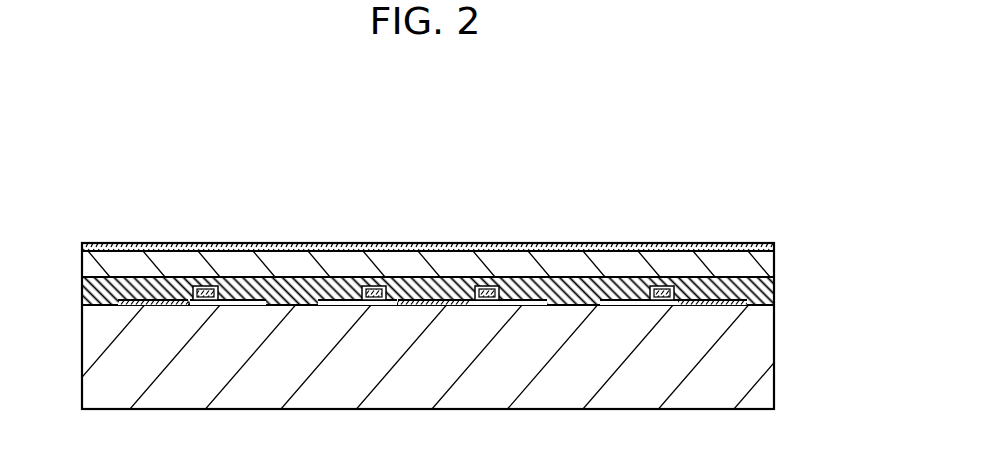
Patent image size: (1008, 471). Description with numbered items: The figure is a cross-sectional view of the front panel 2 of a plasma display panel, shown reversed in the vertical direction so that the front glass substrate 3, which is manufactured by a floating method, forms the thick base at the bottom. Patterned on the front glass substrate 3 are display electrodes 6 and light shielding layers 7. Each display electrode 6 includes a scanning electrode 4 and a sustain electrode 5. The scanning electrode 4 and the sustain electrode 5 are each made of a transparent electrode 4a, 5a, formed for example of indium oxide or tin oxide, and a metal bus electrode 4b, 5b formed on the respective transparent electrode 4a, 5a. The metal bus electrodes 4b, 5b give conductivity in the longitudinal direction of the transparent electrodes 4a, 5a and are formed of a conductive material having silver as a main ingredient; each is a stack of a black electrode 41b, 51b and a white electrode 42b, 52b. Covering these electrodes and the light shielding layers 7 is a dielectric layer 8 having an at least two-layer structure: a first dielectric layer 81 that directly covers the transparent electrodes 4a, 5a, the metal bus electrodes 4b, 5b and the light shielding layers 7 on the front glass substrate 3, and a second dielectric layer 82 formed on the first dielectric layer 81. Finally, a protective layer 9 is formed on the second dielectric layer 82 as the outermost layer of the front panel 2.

The front panel 2 is at (780, 237).
The front glass substrate 3 is at (490, 390).
The scanning electrode 4 is at (250, 161).
The transparent electrode 4a is at (255, 292).
The metal bus electrode 4b is at (113, 201).
The black electrode 41b is at (188, 300).
The white electrode 42b is at (207, 286).
The sustain electrode 5 is at (397, 145).
The transparent electrode 5a is at (325, 292).
The metal bus electrode 5b is at (433, 190).
The black electrode 51b is at (386, 288).
The white electrode 52b is at (372, 286).
The display electrode 6 is at (397, 103).
The light shielding layer 7 is at (452, 298).
The dielectric layer 8 is at (622, 178).
The first dielectric layer 81 is at (715, 298).
The second dielectric layer 82 is at (658, 286).
The protective layer 9 is at (547, 247).